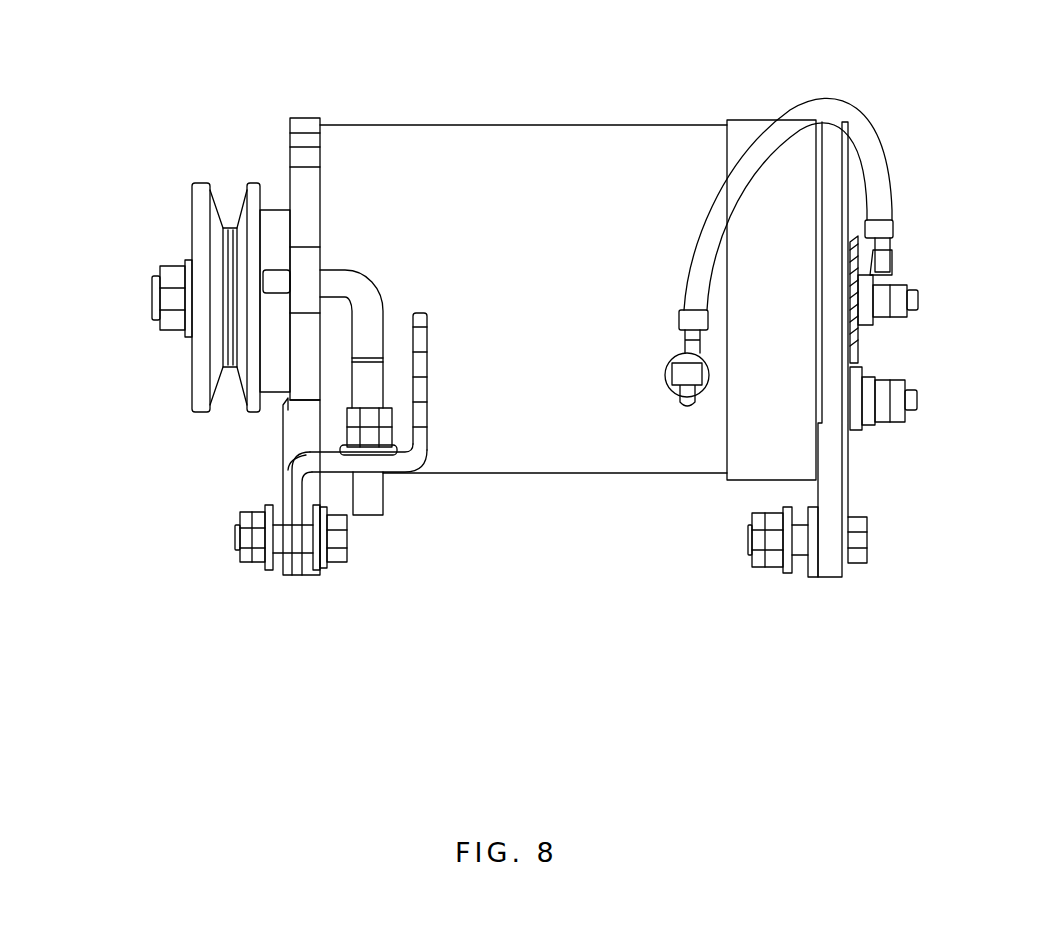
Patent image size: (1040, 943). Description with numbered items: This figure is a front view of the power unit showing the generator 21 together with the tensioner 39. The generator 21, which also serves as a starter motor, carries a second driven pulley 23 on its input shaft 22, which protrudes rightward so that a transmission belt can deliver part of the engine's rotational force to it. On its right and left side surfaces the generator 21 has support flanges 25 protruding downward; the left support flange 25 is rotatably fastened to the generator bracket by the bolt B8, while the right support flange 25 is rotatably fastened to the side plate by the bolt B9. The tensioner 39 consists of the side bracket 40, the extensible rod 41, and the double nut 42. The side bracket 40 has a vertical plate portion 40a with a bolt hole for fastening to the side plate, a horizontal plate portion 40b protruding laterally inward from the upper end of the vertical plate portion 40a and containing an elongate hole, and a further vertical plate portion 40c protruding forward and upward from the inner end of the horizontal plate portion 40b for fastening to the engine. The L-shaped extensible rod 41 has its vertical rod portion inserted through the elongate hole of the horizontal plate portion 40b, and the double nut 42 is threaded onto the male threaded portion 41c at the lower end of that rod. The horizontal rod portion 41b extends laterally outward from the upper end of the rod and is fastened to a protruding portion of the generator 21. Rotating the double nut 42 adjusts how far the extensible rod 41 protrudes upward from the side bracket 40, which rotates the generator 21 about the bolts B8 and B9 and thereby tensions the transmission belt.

The generator 21 is at (508, 125).
The input shaft 22 is at (152, 293).
The second driven pulley 23 is at (207, 183).
The support flange 25 is at (853, 467).
The tensioner 39 is at (398, 505).
The side bracket 40 is at (364, 488).
The vertical plate portion 40a is at (298, 535).
The horizontal plate portion 40b is at (403, 473).
The vertical plate portion 40c is at (430, 322).
The extensible rod 41 is at (373, 283).
The horizontal rod portion 41b is at (332, 265).
The male threaded portion 41c is at (378, 385).
The double nut 42 is at (387, 418).
The bolt B8 is at (867, 543).
The bolt B9 is at (232, 543).